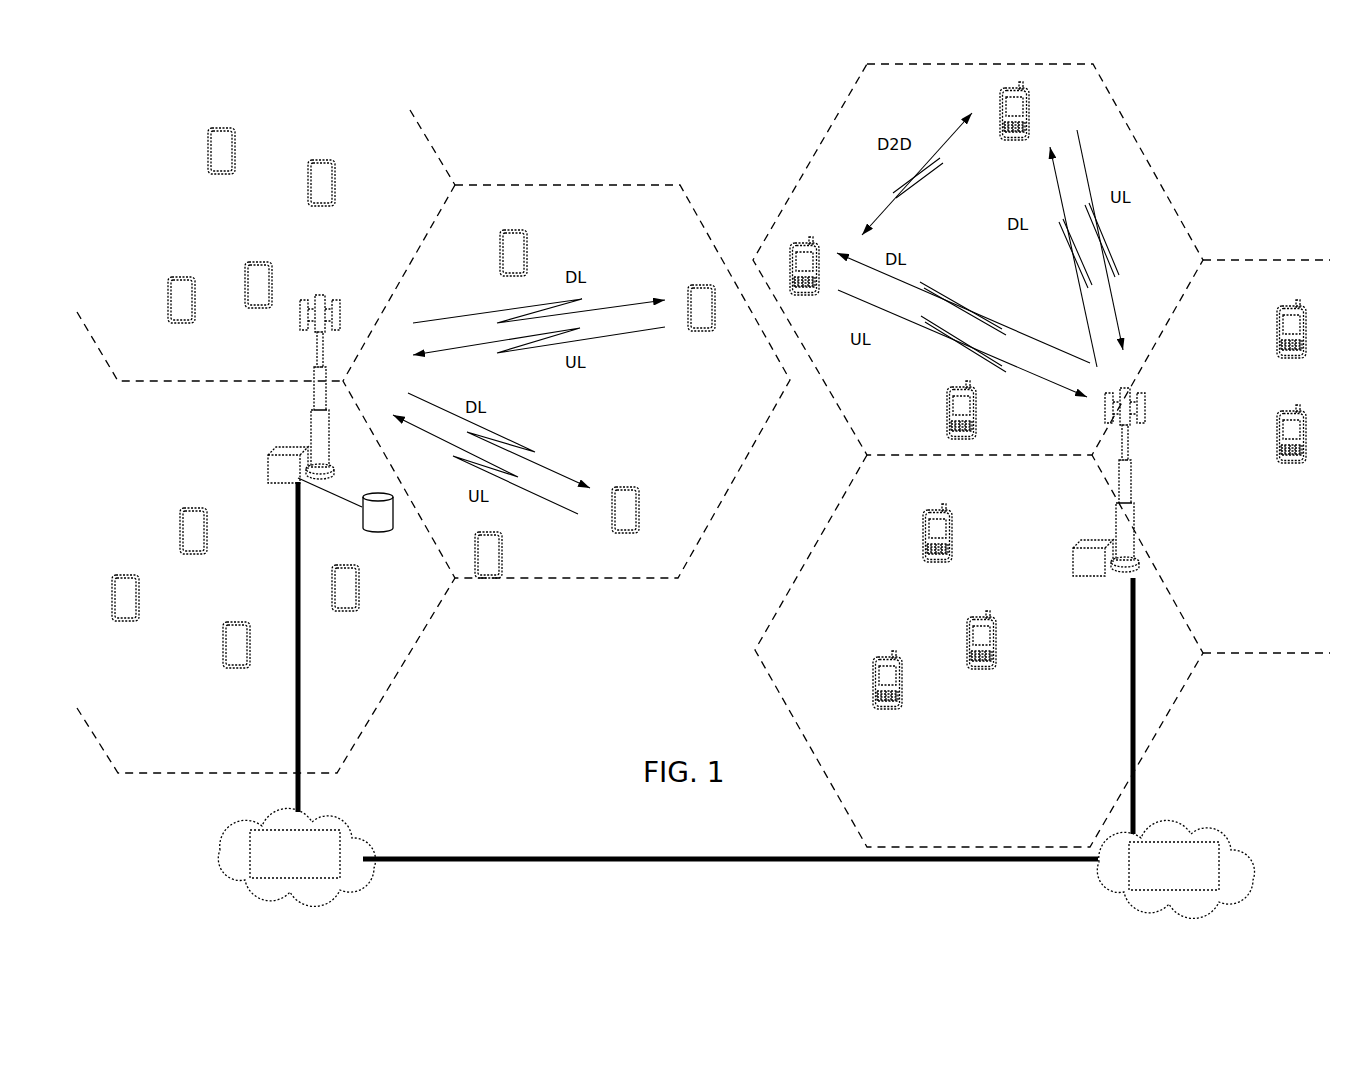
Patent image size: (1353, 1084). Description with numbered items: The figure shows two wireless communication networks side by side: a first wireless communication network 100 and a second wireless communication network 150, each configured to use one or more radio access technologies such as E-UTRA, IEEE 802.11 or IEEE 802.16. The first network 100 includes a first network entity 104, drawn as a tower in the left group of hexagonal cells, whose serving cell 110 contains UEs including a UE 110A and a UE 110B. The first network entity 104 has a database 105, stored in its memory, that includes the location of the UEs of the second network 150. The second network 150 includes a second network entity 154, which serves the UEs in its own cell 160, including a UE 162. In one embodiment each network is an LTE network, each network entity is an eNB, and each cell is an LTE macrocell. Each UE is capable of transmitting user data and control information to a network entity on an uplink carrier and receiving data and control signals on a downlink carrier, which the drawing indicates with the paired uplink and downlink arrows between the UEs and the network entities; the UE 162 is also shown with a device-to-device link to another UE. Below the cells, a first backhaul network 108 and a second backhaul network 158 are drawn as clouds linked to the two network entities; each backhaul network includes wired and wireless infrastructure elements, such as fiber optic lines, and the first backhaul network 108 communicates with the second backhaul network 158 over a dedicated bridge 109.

The first wireless communication network 100 is at (530, 703).
The first network entity 104 is at (268, 405).
The database 105 is at (378, 532).
The first backhaul network 108 is at (218, 850).
The dedicated bridge 109 is at (572, 861).
The cell of the first network 110 is at (626, 582).
The UE 110A is at (699, 283).
The UE 110B is at (621, 533).
The second wireless communication network 150 is at (1287, 237).
The second network entity 154 is at (1216, 545).
The second backhaul network 158 is at (1205, 890).
The cell of the second network 160 is at (835, 415).
The UE of the second network 162 is at (800, 242).